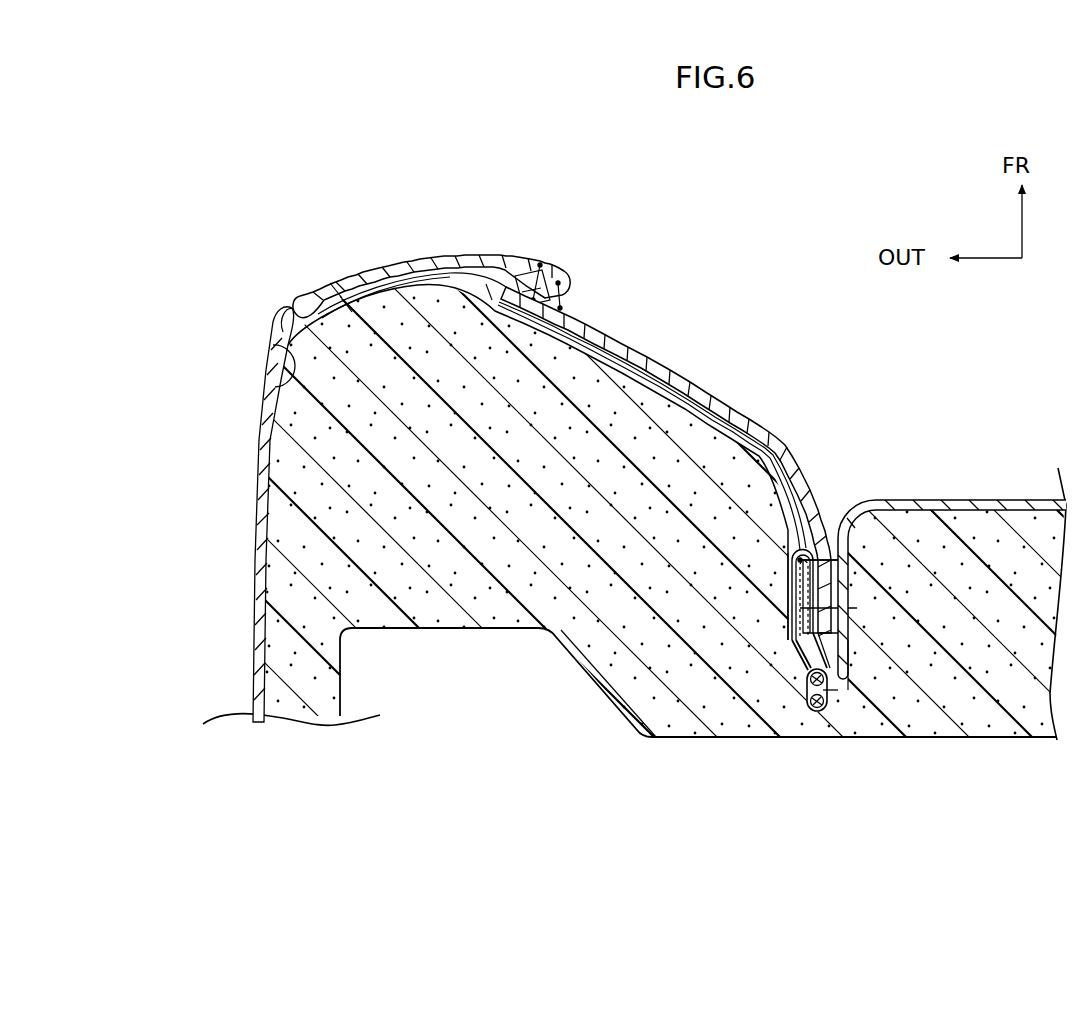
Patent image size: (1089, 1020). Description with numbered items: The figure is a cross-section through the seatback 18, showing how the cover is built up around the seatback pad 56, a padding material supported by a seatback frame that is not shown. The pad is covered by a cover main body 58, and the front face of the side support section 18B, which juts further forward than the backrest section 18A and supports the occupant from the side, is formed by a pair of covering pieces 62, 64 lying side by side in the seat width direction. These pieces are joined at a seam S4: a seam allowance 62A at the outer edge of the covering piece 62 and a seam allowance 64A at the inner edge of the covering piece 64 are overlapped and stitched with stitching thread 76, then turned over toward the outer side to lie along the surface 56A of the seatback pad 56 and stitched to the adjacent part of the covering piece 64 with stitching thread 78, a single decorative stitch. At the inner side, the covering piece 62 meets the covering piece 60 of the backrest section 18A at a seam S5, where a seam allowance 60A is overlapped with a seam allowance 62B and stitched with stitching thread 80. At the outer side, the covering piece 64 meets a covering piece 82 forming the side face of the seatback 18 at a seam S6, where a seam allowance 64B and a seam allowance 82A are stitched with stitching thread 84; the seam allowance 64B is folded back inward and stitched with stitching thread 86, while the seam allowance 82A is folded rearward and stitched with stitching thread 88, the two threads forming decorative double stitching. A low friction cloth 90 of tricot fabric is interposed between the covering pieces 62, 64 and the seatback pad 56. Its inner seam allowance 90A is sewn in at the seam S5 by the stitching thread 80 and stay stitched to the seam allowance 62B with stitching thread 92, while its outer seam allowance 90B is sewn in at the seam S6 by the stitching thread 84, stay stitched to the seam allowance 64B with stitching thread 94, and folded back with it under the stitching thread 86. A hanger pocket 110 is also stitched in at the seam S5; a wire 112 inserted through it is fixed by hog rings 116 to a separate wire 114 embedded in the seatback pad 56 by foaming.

The seatback 18 is at (856, 364).
The backrest section 18A is at (1043, 476).
The side support section 18B is at (637, 276).
The seatback pad 56 is at (455, 632).
The surface of the seatback pad 56A is at (722, 434).
The cover main body 58 is at (906, 498).
The covering piece 60 is at (985, 500).
The seam allowance 60A is at (850, 642).
The covering piece 62 is at (698, 397).
The seam allowance 62A is at (488, 302).
The seam allowance 62B is at (800, 650).
The covering piece 64 is at (434, 257).
The seam allowance 64A is at (497, 263).
The seam allowance 64B is at (397, 308).
The stitching thread 76 is at (560, 310).
The stitching thread 78 is at (541, 265).
The stitching thread 80 is at (848, 560).
The covering piece 82 is at (256, 578).
The seam allowance 82A is at (273, 386).
The stitching thread 84 is at (292, 318).
The stitching thread 86 is at (338, 276).
The stitching thread 88 is at (272, 337).
The low friction cloth 90 is at (636, 352).
The seam allowance 90A is at (806, 664).
The seam allowance 90B is at (373, 288).
The stitching thread 92 is at (857, 608).
The stitching thread 94 is at (342, 292).
The hanger pocket 110 is at (792, 652).
The wire 112 is at (838, 690).
The wire 114 is at (826, 705).
The hog rings 116 is at (817, 708).
The seam S4 is at (580, 290).
The seam S5 is at (833, 512).
The seam S6 is at (288, 288).